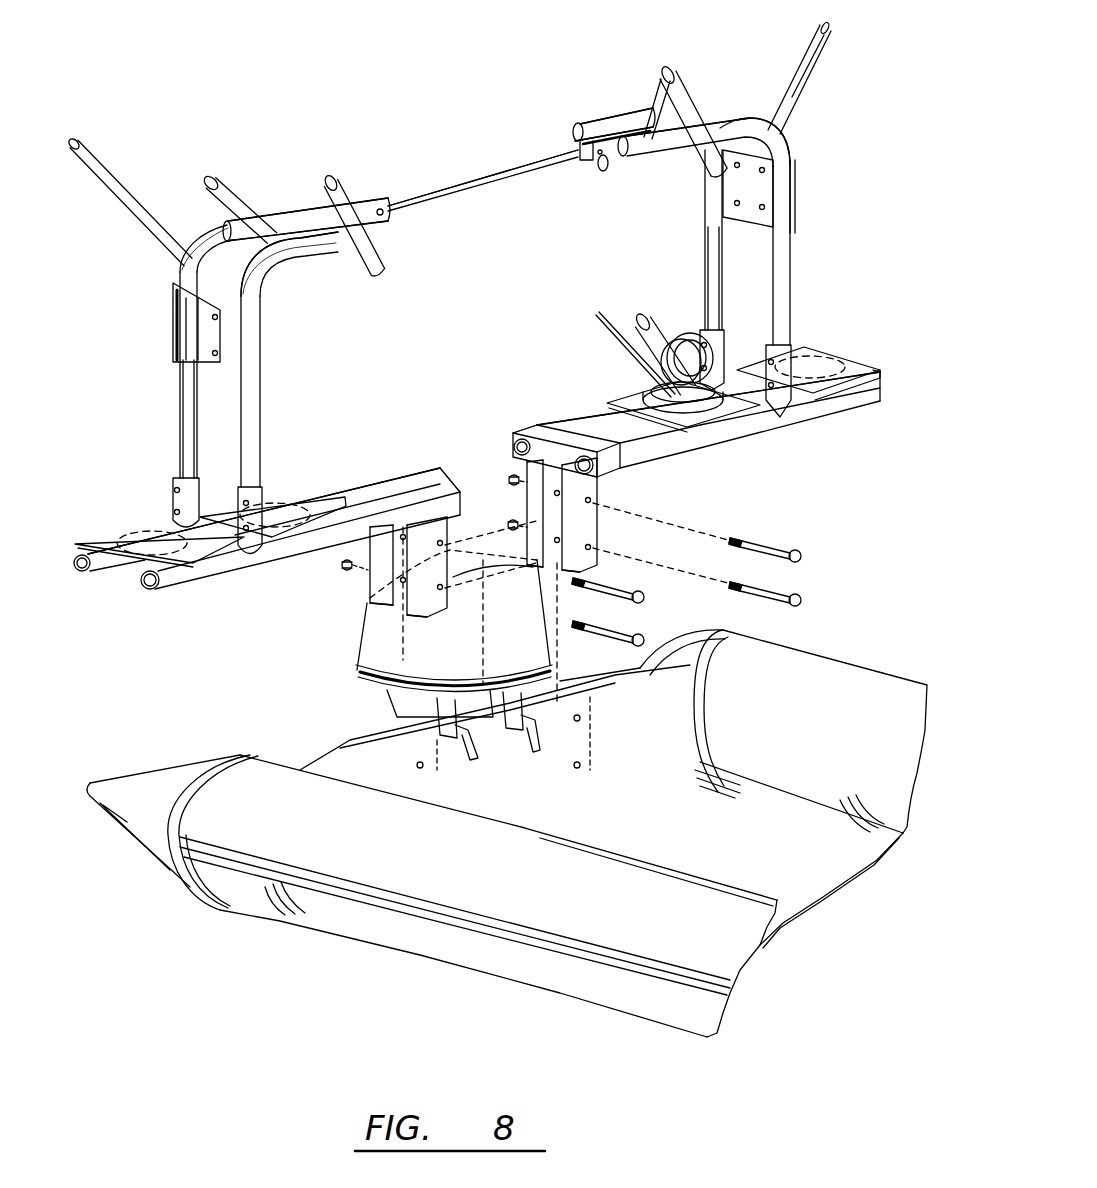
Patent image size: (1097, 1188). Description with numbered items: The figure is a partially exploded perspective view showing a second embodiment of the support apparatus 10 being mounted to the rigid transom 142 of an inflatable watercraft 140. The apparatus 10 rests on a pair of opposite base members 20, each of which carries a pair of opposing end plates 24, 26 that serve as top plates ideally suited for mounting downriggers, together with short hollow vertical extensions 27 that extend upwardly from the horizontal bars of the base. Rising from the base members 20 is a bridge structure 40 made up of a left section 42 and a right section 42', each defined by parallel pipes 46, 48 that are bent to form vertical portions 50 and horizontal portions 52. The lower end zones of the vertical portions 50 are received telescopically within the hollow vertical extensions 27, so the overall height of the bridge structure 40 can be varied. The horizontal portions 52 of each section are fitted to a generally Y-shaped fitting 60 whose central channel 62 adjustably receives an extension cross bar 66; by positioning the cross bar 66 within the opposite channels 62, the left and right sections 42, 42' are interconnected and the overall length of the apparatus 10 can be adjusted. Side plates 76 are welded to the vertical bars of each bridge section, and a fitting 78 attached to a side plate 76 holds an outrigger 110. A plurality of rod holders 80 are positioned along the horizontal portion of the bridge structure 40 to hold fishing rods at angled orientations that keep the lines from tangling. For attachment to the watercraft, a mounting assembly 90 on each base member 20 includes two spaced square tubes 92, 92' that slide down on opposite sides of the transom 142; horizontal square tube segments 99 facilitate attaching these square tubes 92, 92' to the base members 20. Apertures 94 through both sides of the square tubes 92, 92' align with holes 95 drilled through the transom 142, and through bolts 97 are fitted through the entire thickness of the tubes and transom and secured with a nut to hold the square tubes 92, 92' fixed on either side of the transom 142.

The support apparatus 10 is at (441, 125).
The base member 20 is at (360, 470).
The end plate 24 is at (157, 530).
The end plate 26 is at (273, 503).
The hollow vertical extension 27 is at (245, 507).
The bridge structure 40 is at (277, 205).
The left bridge section 42 is at (267, 265).
The right bridge section 42' is at (744, 183).
The parallel pipe 46 is at (178, 383).
The parallel pipe 48 is at (262, 347).
The vertical portion 50 is at (178, 418).
The horizontal portion 52 is at (203, 237).
The Y-shaped fitting 60 is at (381, 211).
The channel 62 is at (375, 203).
The extension cross bar 66 is at (515, 165).
The side plate 76 is at (178, 290).
The fitting 78 is at (185, 333).
The rod holder 80 is at (210, 177).
The mounting assembly 90 is at (372, 576).
The square tube 92 is at (407, 536).
The square tube 92' is at (544, 562).
The aperture 94 is at (445, 588).
The drilled hole 95 is at (420, 765).
The through bolt 97 is at (797, 553).
The horizontal square tube segment 99 is at (413, 480).
The outrigger 110 is at (98, 158).
The inflatable watercraft 140 is at (822, 662).
The transom 142 is at (375, 727).